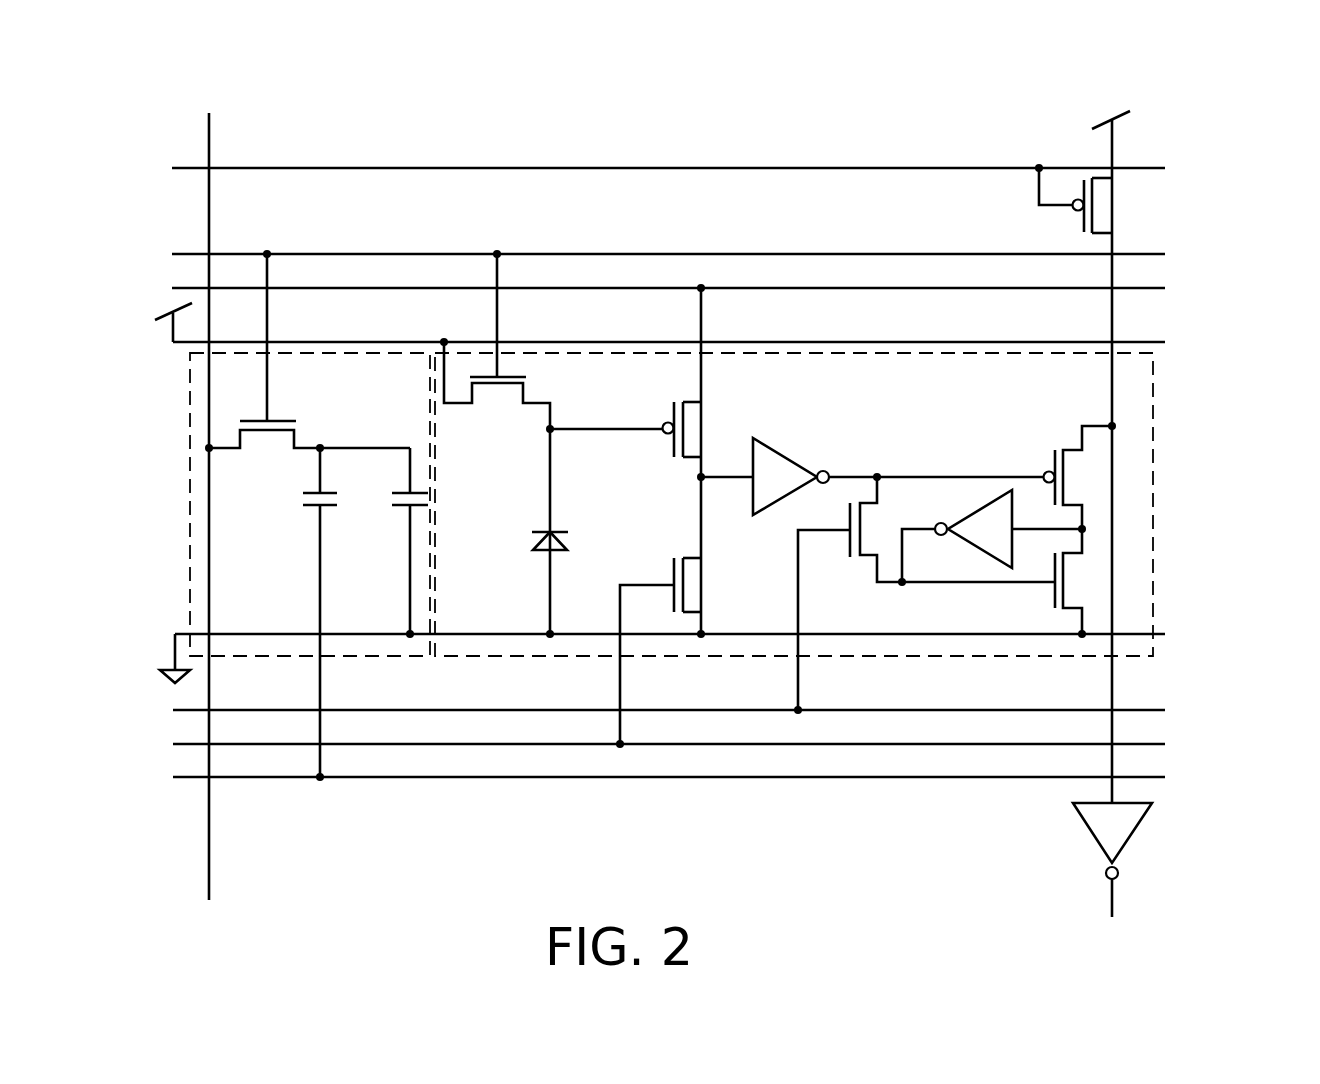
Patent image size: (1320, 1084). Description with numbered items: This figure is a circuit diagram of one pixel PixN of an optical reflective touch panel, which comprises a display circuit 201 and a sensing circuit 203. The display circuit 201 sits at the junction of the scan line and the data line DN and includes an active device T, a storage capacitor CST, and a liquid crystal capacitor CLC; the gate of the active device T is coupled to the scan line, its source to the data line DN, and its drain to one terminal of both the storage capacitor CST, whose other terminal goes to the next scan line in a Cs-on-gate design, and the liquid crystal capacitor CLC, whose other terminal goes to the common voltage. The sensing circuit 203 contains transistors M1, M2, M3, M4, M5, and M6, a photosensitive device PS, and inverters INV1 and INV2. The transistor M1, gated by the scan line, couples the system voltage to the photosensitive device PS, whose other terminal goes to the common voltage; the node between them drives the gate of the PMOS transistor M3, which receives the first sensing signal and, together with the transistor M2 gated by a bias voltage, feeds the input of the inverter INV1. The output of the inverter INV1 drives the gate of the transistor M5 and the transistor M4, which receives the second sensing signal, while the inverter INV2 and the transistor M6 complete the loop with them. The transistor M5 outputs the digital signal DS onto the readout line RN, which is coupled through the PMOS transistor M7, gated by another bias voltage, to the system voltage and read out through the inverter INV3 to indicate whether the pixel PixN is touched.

The display circuit 201 is at (332, 352).
The sensing circuit 203 is at (785, 353).
The active device T is at (262, 351).
The storage capacitor CST is at (297, 612).
The liquid crystal capacitor CLC is at (374, 543).
The transistor M1 is at (507, 444).
The transistor M2 is at (671, 612).
The transistor M3 is at (642, 382).
The transistor M4 is at (924, 595).
The transistor M5 is at (1080, 477).
The transistor M6 is at (1077, 583).
The PMOS transistor M7 is at (1084, 198).
The photosensitive device PS is at (567, 540).
The inverter INV1 is at (785, 445).
The inverter INV2 is at (985, 501).
The inverter INV3 is at (1133, 837).
The digital signal DS is at (1090, 461).
The Nth readout line RN is at (1112, 385).
The Nth data line DN is at (209, 147).
The Nth pixel PixN is at (1270, 942).